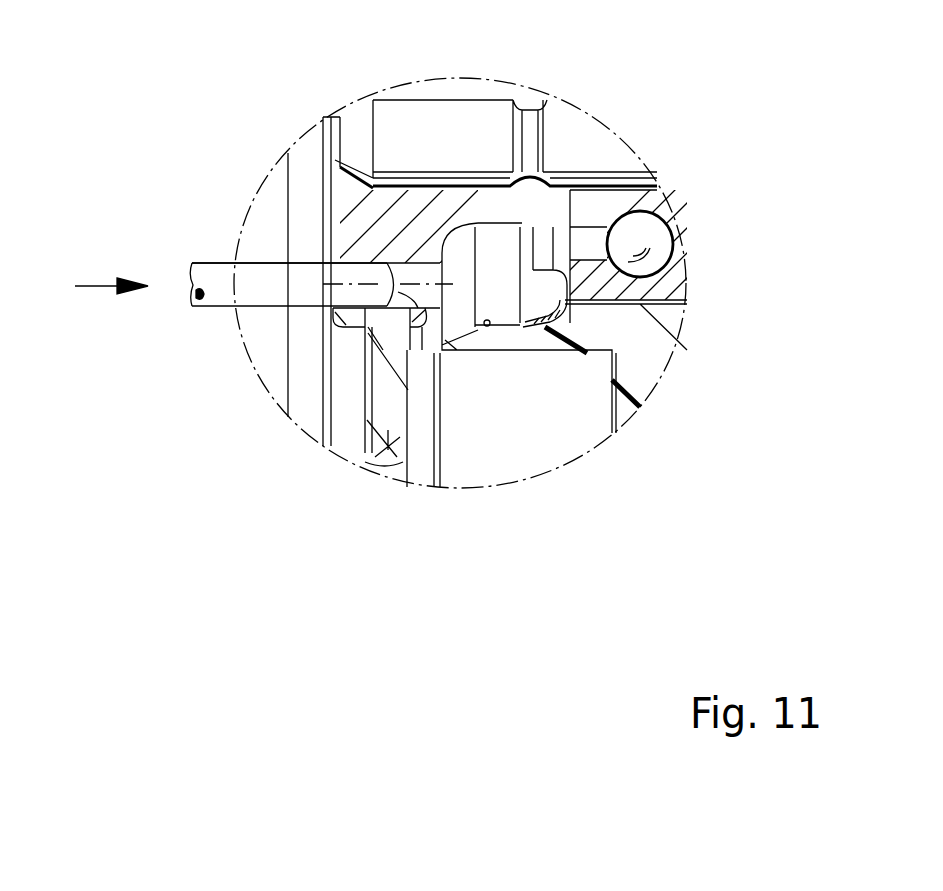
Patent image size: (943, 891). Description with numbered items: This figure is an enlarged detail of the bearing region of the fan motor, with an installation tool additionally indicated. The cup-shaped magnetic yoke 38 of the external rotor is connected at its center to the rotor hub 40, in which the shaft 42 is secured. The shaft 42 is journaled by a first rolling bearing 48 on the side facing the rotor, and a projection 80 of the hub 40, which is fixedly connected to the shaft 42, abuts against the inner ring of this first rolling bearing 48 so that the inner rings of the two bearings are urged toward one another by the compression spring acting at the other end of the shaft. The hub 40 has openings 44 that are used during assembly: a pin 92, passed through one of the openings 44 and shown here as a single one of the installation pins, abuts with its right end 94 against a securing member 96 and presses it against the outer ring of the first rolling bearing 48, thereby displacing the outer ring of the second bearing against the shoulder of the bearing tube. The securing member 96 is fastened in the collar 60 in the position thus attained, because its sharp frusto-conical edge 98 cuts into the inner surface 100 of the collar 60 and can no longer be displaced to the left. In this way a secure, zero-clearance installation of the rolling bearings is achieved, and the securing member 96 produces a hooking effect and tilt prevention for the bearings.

The magnetic yoke 38 is at (403, 437).
The rotor hub 40 is at (347, 198).
The shaft 42 is at (645, 173).
The openings 44 is at (412, 272).
The first rolling bearing 48 is at (673, 274).
The collar 60 is at (520, 350).
The projection 80 is at (573, 187).
The pin 92 is at (217, 275).
The end 94 is at (367, 333).
The securing member 96 is at (563, 293).
The frusto-conical edge 98 is at (612, 405).
The inner surface 100 is at (487, 323).